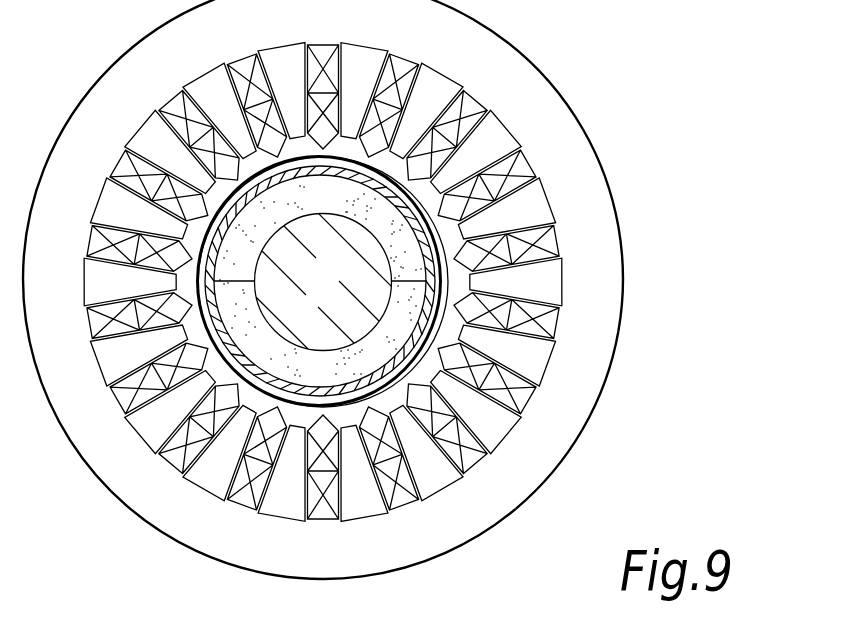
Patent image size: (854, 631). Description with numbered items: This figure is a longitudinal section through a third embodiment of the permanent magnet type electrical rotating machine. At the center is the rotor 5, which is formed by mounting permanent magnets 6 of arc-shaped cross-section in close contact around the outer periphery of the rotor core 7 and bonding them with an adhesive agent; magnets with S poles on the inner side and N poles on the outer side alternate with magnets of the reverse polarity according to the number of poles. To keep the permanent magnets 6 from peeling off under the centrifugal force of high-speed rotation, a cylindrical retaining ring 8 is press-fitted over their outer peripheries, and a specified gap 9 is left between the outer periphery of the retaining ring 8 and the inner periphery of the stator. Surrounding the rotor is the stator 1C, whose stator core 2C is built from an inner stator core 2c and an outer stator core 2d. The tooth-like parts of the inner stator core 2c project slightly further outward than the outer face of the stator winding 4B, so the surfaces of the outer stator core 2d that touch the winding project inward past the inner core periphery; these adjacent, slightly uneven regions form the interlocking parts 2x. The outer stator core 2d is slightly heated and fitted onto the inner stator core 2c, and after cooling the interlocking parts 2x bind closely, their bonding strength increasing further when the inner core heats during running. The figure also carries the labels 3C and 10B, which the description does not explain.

The stator 1C is at (441, 29).
The stator core 2C is at (466, 534).
The inner stator core 2c is at (604, 385).
The outer stator core 2d is at (607, 335).
The interlocking parts 2x is at (163, 107).
The C-phase tooth 3C is at (534, 260).
The stator winding 4B is at (127, 163).
The rotor 5 is at (419, 188).
The permanent magnets 6 is at (257, 215).
The rotor core 7 is at (332, 295).
The retaining ring 8 is at (437, 77).
The gap 9 is at (522, 210).
The B-phase tooth 10B is at (290, 97).